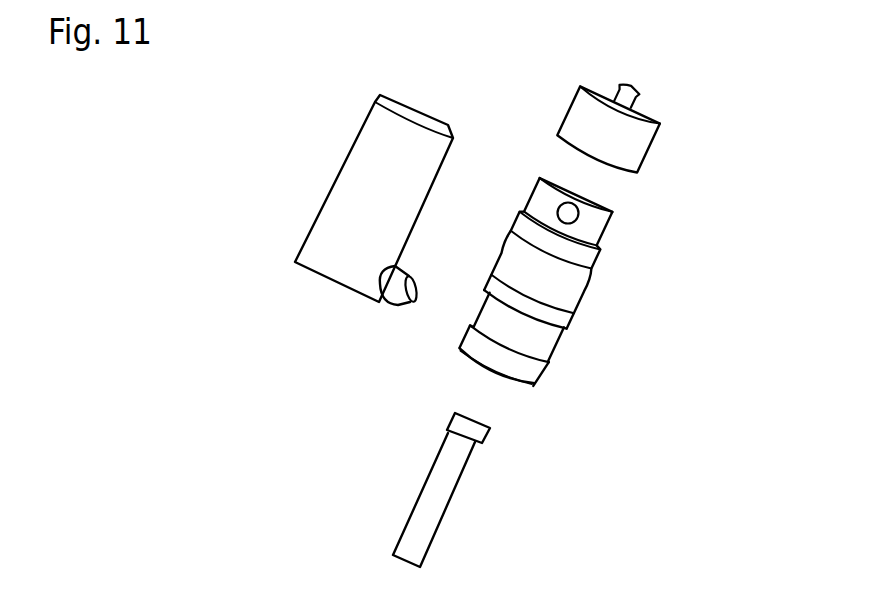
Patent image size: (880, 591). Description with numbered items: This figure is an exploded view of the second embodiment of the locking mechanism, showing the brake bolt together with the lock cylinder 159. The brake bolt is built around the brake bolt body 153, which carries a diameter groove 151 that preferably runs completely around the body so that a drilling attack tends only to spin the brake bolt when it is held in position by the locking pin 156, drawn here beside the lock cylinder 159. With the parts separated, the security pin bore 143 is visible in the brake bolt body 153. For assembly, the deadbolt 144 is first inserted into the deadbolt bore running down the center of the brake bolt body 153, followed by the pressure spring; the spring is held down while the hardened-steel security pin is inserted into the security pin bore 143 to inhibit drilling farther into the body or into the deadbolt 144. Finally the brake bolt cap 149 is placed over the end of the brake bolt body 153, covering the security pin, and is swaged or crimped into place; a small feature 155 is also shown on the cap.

The security pin bore 143 is at (568, 213).
The deadbolt 144 is at (437, 498).
The brake bolt cap 149 is at (618, 133).
The diameter groove 151 is at (555, 343).
The brake bolt body 153 is at (558, 288).
The post 155 is at (640, 93).
The locking pin 156 is at (398, 287).
The lock cylinder 159 is at (355, 209).